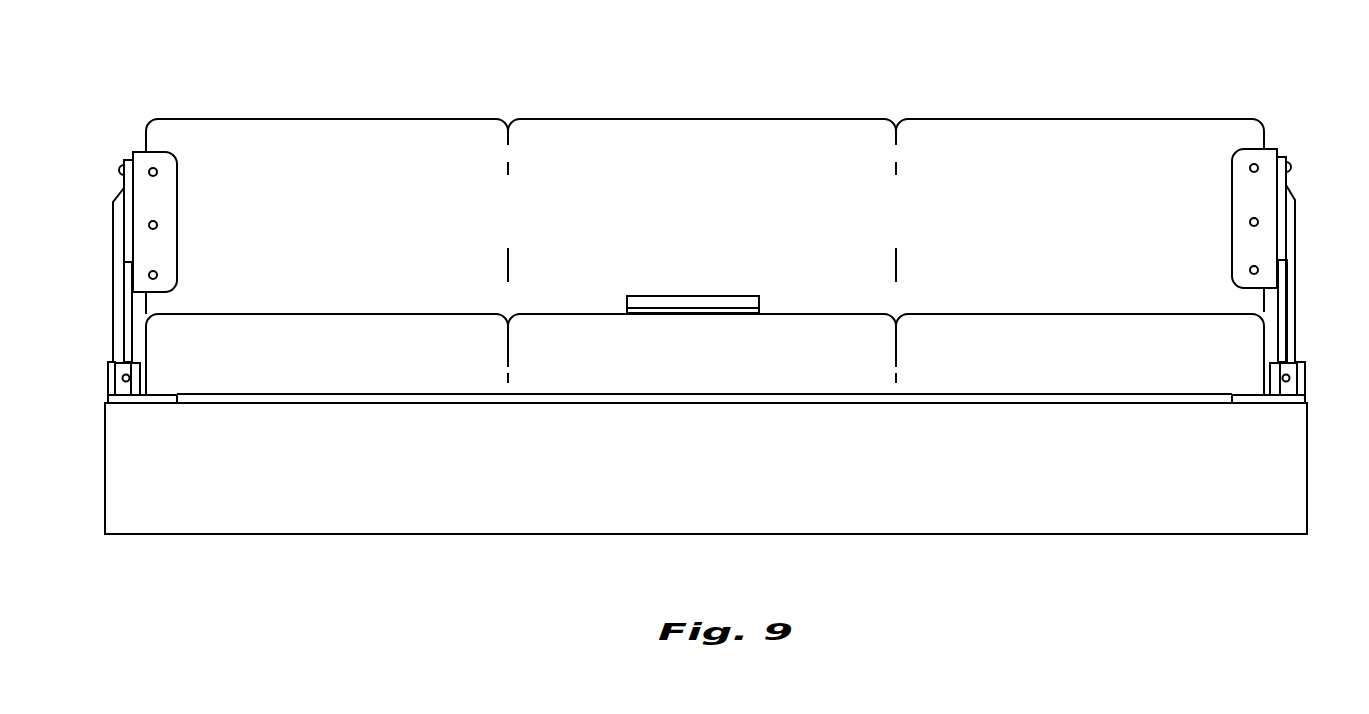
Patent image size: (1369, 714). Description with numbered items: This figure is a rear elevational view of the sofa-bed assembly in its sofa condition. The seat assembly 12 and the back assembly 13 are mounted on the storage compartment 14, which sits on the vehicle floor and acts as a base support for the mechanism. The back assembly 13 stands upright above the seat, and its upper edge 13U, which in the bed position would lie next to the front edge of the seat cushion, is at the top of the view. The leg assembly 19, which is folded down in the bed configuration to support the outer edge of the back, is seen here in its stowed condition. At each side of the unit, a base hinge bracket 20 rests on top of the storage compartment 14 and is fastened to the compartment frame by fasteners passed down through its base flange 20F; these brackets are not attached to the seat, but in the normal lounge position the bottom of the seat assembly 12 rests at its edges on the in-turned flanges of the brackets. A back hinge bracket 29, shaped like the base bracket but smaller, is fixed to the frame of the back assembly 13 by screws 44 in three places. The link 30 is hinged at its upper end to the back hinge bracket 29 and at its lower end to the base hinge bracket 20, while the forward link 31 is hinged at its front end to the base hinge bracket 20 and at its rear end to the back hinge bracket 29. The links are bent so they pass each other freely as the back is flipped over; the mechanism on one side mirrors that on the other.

The seat assembly 12 is at (729, 364).
The back assembly 13 is at (681, 224).
The upper edge of the back cushion 13U is at (686, 119).
The storage compartment 14 is at (701, 489).
The leg assembly 19 is at (751, 283).
The base hinge bracket 20 is at (107, 374).
The base flange 20F is at (152, 405).
The back hinge bracket 29 is at (146, 198).
The link 30 is at (113, 255).
The forward link 31 is at (122, 307).
The screws 44 is at (157, 171).